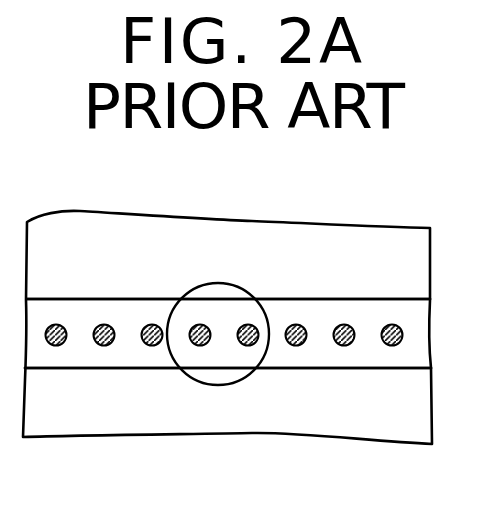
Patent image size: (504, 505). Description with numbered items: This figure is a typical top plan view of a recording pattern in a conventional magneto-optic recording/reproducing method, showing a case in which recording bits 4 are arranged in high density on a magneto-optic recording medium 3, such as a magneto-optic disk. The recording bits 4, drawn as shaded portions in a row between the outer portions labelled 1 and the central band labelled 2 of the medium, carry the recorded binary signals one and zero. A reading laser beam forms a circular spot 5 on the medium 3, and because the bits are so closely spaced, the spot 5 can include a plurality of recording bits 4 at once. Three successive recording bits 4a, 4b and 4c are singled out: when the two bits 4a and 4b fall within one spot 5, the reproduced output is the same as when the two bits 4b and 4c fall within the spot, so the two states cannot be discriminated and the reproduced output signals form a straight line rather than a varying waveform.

The insulating substrate 1 is at (410, 267).
The intermediate layer 2 is at (415, 337).
The magneto-optic recording medium 3 is at (386, 240).
The recording bits 4 is at (338, 344).
The recording bit 4a is at (203, 325).
The recording bit 4b is at (249, 325).
The recording bit 4c is at (299, 325).
The spot 5 is at (210, 387).